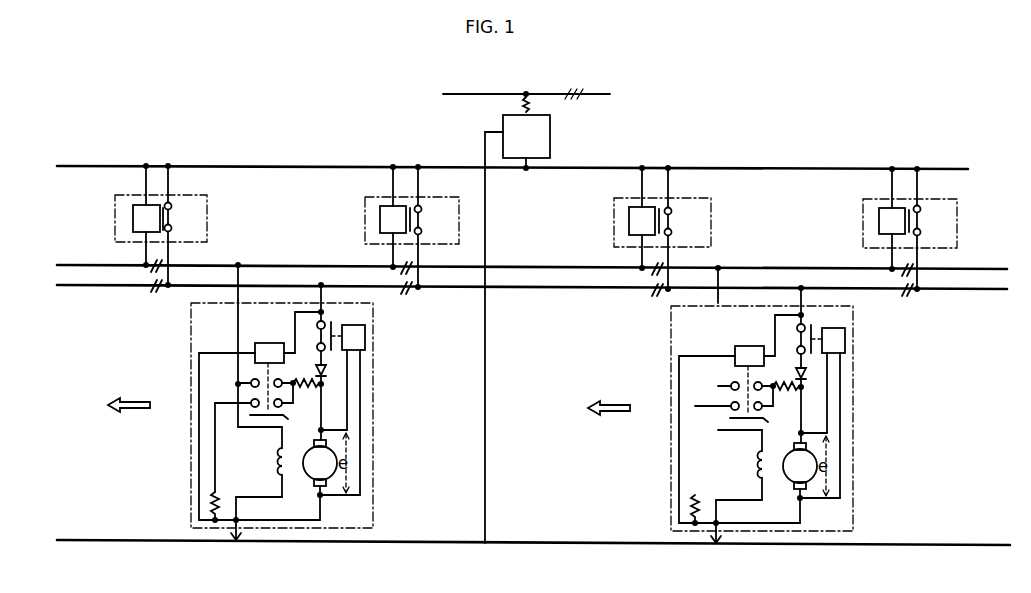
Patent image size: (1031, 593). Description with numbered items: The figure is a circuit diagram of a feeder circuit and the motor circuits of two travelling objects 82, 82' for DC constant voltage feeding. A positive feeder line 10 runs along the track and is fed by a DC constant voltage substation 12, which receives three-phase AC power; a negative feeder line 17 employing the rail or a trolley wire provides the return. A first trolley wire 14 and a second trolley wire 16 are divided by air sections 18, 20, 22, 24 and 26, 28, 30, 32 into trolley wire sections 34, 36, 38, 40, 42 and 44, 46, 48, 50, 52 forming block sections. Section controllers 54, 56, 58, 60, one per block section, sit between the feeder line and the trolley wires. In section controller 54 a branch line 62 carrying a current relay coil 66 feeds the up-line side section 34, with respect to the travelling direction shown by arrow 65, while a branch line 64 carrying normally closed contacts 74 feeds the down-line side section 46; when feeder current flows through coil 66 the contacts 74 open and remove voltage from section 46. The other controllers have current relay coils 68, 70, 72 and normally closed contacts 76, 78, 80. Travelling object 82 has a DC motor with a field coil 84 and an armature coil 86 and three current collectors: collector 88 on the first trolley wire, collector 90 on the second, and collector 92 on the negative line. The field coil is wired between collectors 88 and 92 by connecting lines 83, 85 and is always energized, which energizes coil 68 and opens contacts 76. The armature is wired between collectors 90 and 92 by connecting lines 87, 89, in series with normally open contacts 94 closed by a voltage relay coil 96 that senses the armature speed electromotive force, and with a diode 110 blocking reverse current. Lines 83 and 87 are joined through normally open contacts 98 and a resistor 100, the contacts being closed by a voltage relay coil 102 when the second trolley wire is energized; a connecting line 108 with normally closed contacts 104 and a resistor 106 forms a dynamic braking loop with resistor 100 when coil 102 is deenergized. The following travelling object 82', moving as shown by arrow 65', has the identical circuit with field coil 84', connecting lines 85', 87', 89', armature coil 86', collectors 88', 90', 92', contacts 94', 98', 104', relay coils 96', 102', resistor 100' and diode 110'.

The positive feeder line 10 is at (270, 165).
The DC constant voltage substation 12 is at (551, 132).
The first trolley wire 14 is at (26, 265).
The second trolley wire 16 is at (26, 290).
The negative feeder line 17 is at (132, 542).
The air section 18 is at (161, 266).
The air section 20 is at (412, 268).
The air section 22 is at (662, 268).
The air section 24 is at (912, 269).
The air section 26 is at (153, 293).
The air section 28 is at (404, 295).
The air section 30 is at (655, 297).
The air section 32 is at (905, 298).
The trolley wire section 34 is at (93, 264).
The trolley wire section 36 is at (303, 265).
The trolley wire section 38 is at (564, 266).
The trolley wire section 40 is at (802, 267).
The trolley wire section 42 is at (982, 268).
The trolley wire section 44 is at (69, 288).
The trolley wire section 46 is at (250, 287).
The trolley wire section 48 is at (535, 290).
The trolley wire section 50 is at (850, 290).
The trolley wire section 52 is at (970, 291).
The section controller 54 is at (114, 214).
The section controller 56 is at (364, 216).
The section controller 58 is at (613, 216).
The section controller 60 is at (862, 218).
The branch line 62 is at (144, 190).
The branch line 64 is at (170, 190).
The arrow 65 is at (129, 388).
The current relay coil 66 is at (148, 236).
The current relay coil 68 is at (395, 218).
The current relay coil 70 is at (644, 219).
The current relay coil 72 is at (894, 220).
The normally closed contacts 74 is at (172, 218).
The normally closed contacts 76 is at (422, 219).
The normally closed contacts 78 is at (672, 219).
The normally closed contacts 80 is at (932, 230).
The travelling object 82 is at (306, 415).
The connecting line 83 is at (236, 336).
The field coil 84 is at (260, 462).
The connecting line 85 is at (259, 438).
The armature coil 86 is at (320, 467).
The connecting line 87 is at (333, 410).
The current collector 88 is at (219, 281).
The connecting line 89 is at (335, 507).
The current collector 90 is at (340, 298).
The current collector 92 is at (255, 538).
The normally open contacts 94 is at (316, 348).
The voltage relay coil 96 is at (343, 377).
The normally open contacts 98 is at (248, 387).
The resistor 100 is at (302, 374).
The voltage relay coil 102 is at (287, 362).
The normally closed contacts 104 is at (282, 428).
The resistor 106 is at (218, 503).
The connecting line 108 is at (216, 433).
The diode 110 is at (360, 422).
The arrow 65' is at (609, 391).
The travelling object 82' is at (788, 418).
The field coil 84' is at (740, 465).
The connecting line 85' is at (739, 441).
The armature coil 86' is at (800, 470).
The connecting line 87' is at (815, 413).
The current collector 88' is at (739, 284).
The connecting line 89' is at (823, 510).
The current collector 90' is at (823, 301).
The current collector 92' is at (739, 539).
The normally open contacts 94' is at (783, 351).
The voltage relay coil 96' is at (823, 380).
The normally open contacts 98' is at (730, 389).
The resistor 100' is at (783, 375).
The voltage relay coil 102' is at (765, 365).
The normally closed contacts 104' is at (766, 430).
The diode 110' is at (845, 425).